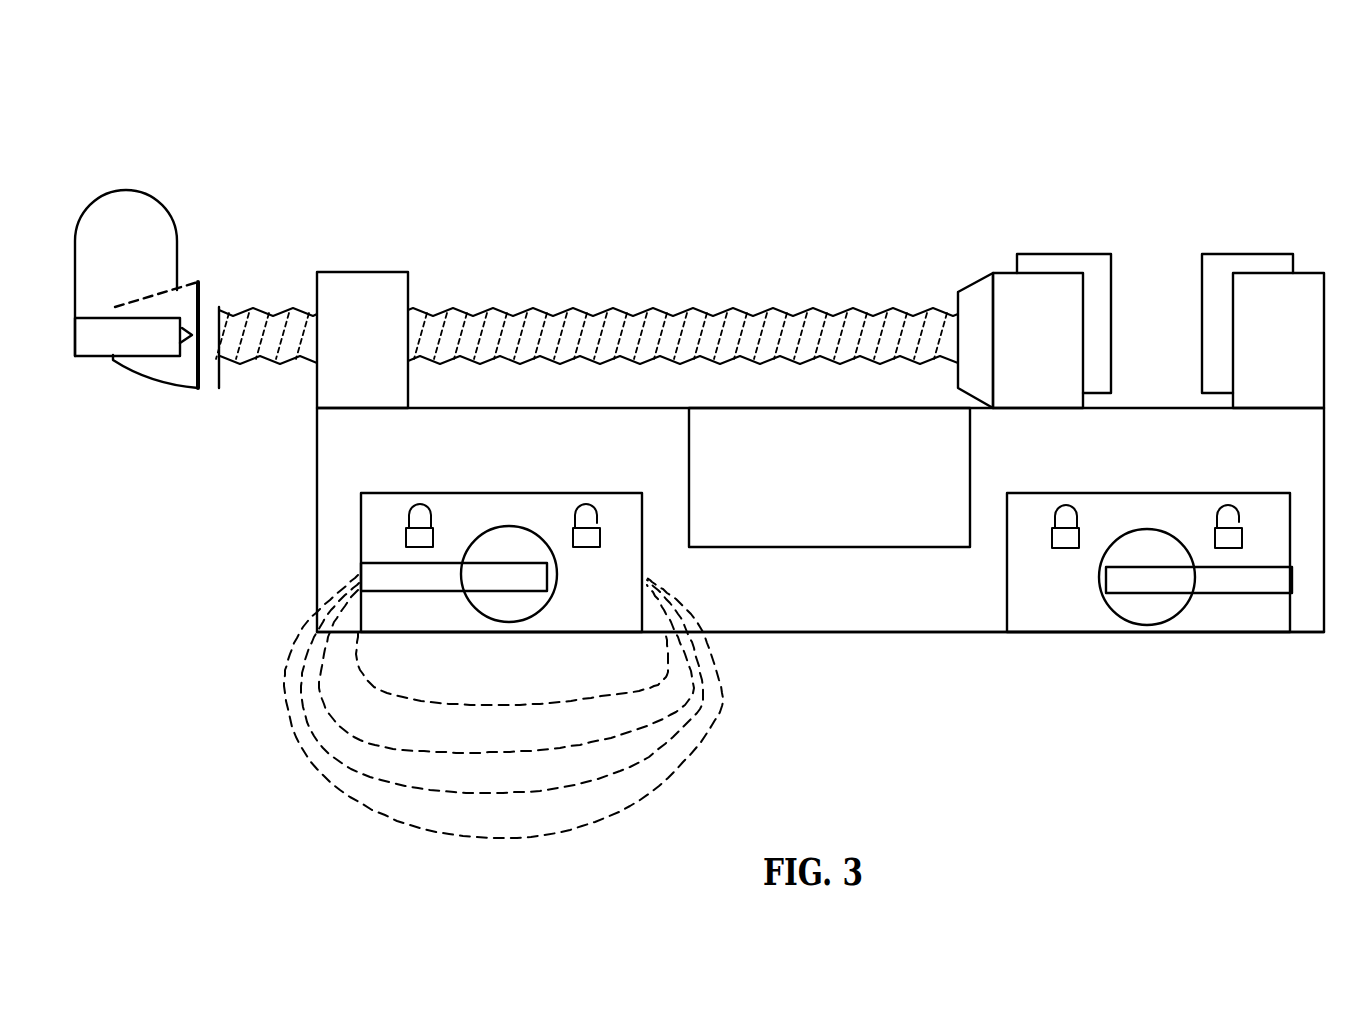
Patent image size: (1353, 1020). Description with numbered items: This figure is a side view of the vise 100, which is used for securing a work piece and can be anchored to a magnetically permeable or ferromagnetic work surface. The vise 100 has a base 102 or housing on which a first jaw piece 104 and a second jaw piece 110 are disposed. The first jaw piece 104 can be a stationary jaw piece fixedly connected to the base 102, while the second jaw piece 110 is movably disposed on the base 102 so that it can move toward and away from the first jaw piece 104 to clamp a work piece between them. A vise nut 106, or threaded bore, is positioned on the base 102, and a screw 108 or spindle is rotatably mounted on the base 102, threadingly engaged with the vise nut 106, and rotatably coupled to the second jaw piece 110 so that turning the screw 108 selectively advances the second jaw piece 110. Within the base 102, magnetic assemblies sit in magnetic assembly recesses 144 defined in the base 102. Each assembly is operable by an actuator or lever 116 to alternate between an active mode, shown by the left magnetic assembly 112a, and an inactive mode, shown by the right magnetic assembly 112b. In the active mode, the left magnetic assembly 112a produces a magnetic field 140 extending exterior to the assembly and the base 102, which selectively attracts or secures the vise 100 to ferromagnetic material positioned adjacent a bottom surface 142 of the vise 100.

The vise 100 is at (1172, 132).
The base 102 is at (337, 439).
The first jaw piece 104 is at (1257, 262).
The vise nut 106 is at (312, 313).
The screw 108 is at (477, 325).
The second jaw piece 110 is at (1052, 255).
The left magnetic assembly 112a is at (380, 516).
The right magnetic assembly 112b is at (1037, 608).
The lever 116 is at (382, 573).
The magnetic field 140 is at (285, 682).
The bottom surface 142 is at (838, 635).
The magnetic assembly recess 144 is at (567, 486).